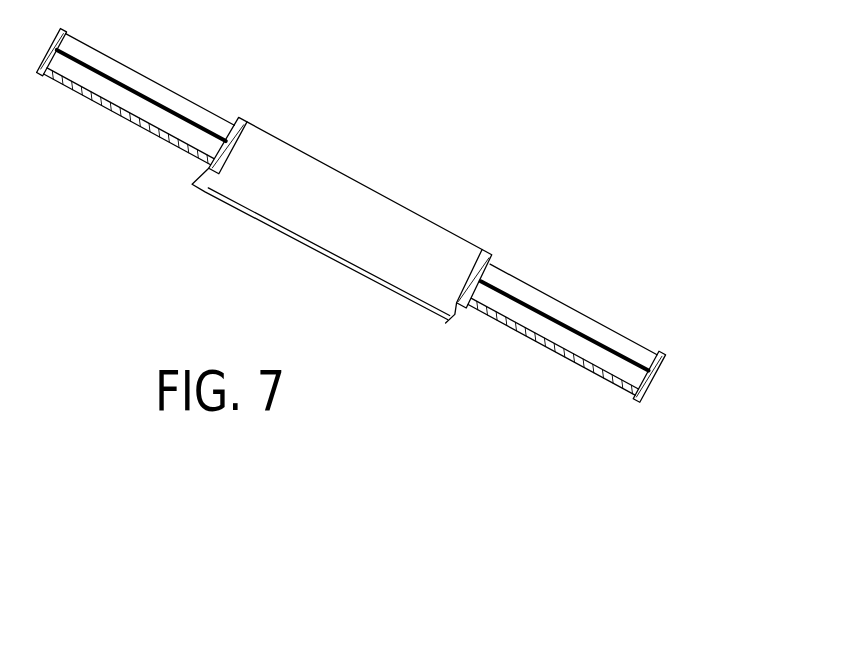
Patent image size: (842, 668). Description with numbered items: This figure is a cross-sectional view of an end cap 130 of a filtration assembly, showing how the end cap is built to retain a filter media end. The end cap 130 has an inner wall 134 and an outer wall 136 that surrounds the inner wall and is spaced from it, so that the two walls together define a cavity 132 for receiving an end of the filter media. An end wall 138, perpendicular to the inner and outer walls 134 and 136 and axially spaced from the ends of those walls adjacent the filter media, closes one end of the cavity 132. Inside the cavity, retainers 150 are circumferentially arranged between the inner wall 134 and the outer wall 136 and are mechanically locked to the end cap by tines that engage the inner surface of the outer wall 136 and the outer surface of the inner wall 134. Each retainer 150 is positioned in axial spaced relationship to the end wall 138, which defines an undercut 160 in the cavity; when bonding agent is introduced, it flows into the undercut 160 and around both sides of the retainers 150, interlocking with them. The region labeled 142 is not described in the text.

The end cap 130 is at (598, 305).
The cavity 132 is at (170, 93).
The inner wall 134 is at (490, 257).
The outer wall 136 is at (657, 376).
The end wall 138 is at (592, 366).
The housing 142 is at (380, 220).
The retainer 150 is at (542, 318).
The undercut 160 is at (81, 78).